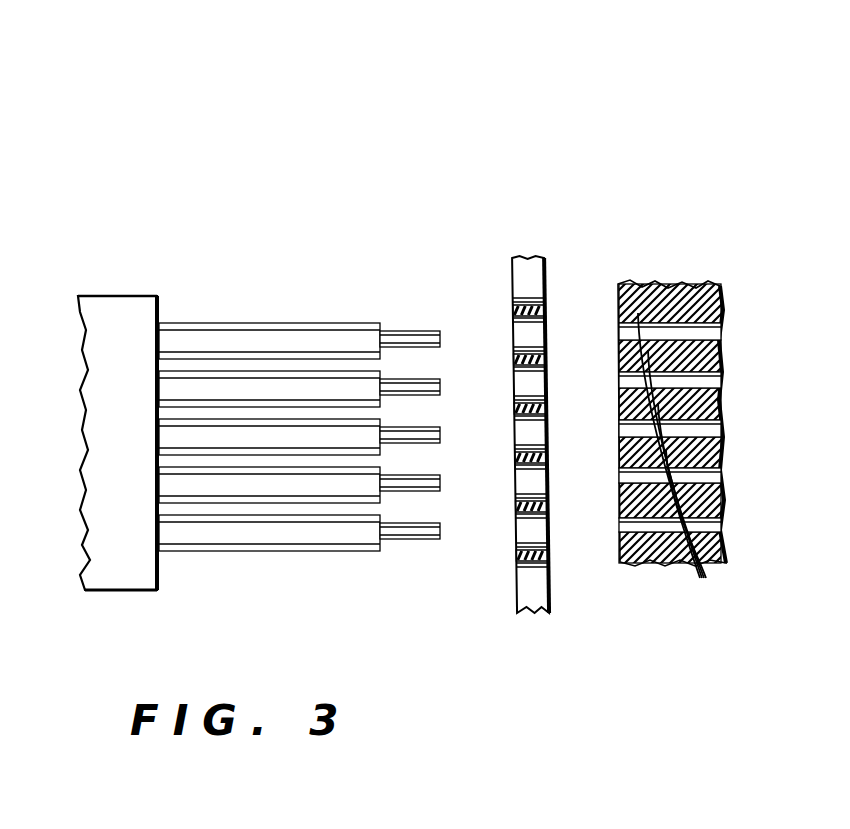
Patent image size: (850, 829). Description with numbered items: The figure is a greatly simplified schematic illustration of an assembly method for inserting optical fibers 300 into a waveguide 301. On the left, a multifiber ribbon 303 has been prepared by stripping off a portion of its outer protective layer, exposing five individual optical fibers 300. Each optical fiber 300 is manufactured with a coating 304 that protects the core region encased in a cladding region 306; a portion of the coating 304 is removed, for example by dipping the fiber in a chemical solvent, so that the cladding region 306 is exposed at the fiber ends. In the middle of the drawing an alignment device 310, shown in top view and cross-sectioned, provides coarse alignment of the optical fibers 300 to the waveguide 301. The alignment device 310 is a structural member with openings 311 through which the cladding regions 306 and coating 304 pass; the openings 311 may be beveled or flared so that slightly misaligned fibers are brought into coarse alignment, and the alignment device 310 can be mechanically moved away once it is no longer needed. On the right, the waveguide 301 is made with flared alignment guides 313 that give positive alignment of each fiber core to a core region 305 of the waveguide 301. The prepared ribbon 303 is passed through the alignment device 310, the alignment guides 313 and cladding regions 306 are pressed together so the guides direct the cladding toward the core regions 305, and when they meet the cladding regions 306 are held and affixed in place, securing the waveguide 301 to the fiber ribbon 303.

The optical fibers 300 is at (386, 112).
The waveguide 301 is at (752, 246).
The multifiber ribbon 303 is at (114, 296).
The coating 304 is at (283, 535).
The core region 305 is at (725, 525).
The cladding region 306 is at (412, 532).
The alignment device 310 is at (523, 258).
The openings 311 is at (537, 536).
The alignment guides 313 is at (688, 468).